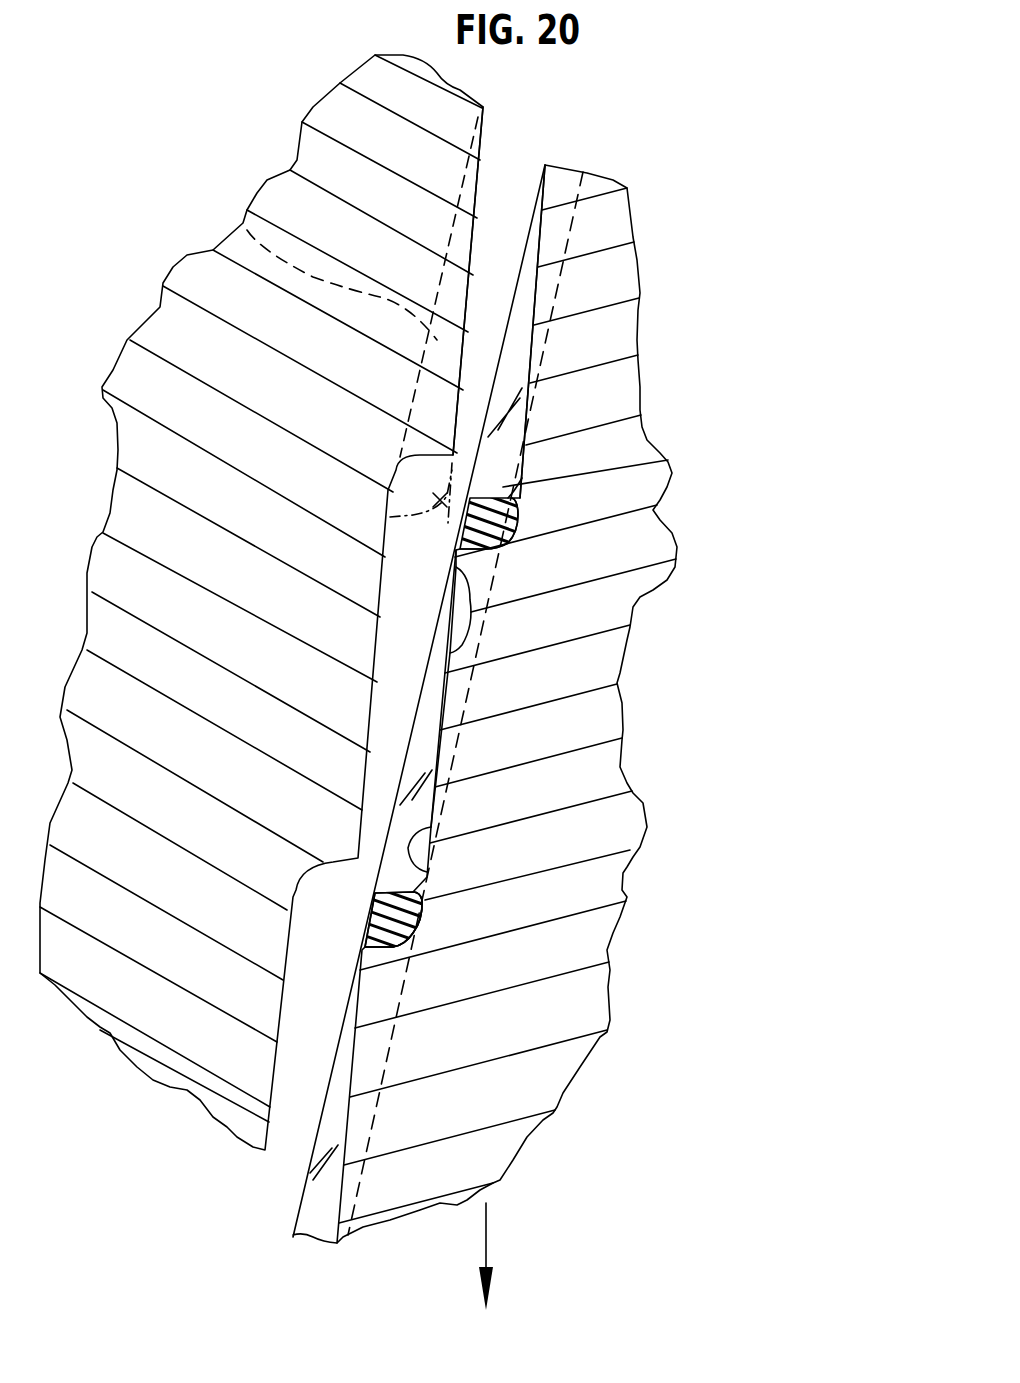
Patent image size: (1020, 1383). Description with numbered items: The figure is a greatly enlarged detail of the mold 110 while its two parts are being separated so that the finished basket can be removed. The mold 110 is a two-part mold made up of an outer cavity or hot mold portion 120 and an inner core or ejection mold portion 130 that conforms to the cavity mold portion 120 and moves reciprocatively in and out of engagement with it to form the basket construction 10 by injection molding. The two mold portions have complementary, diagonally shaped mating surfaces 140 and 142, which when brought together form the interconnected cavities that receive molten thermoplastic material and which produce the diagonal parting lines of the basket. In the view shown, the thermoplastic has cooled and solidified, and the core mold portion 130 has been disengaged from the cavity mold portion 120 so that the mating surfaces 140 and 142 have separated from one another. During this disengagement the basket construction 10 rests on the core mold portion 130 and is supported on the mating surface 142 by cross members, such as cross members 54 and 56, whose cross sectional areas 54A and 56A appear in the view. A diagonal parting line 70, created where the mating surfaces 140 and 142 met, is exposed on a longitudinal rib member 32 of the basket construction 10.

The basket construction 10 is at (300, 1200).
The longitudinal rib member 32 is at (247, 230).
The cross member 54 is at (372, 905).
The cross sectional area 54A is at (457, 549).
The cross member 56 is at (525, 470).
The cross sectional area 56A is at (522, 512).
The diagonal parting line 70 is at (470, 592).
The mold 110 is at (200, 187).
The cavity mold portion 120 is at (207, 622).
The core mold portion 130 is at (603, 848).
The mating surface 140 is at (485, 183).
The mating surface 142 is at (430, 875).